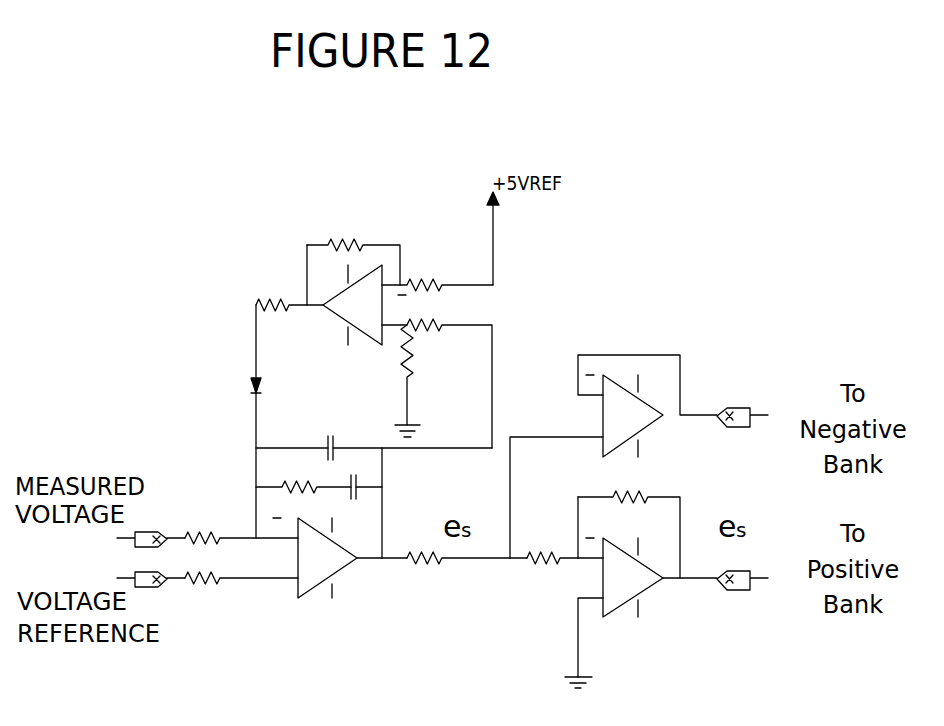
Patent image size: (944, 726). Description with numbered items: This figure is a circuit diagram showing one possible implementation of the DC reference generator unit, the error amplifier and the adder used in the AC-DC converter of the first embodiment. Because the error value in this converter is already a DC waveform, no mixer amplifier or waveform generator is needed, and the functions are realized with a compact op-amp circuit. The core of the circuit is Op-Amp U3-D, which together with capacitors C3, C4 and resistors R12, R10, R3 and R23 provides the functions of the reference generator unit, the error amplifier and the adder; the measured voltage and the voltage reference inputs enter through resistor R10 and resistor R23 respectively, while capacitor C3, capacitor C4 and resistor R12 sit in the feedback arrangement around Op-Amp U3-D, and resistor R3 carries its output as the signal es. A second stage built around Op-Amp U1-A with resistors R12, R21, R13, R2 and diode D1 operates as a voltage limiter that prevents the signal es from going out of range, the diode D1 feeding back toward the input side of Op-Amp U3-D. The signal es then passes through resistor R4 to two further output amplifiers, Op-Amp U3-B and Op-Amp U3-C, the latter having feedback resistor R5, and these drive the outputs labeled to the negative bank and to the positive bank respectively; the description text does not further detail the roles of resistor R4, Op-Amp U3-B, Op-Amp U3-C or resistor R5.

The resistor R12 is at (328, 348).
The Op-Amp U1-A is at (324, 295).
The resistor R21 is at (437, 272).
The resistor R2 is at (281, 338).
The resistor R13 is at (437, 383).
The diode D1 is at (235, 452).
The capacitor C3 is at (374, 435).
The capacitor C4 is at (362, 503).
The resistor R10 is at (238, 521).
The resistor R23 is at (239, 597).
The Op-Amp U3-D is at (340, 592).
The resistor R3 is at (467, 576).
The resistor R4 is at (565, 576).
The operational amplifier U3-B is at (673, 388).
The operational amplifier U3-C is at (666, 592).
The resistor R5 is at (629, 534).